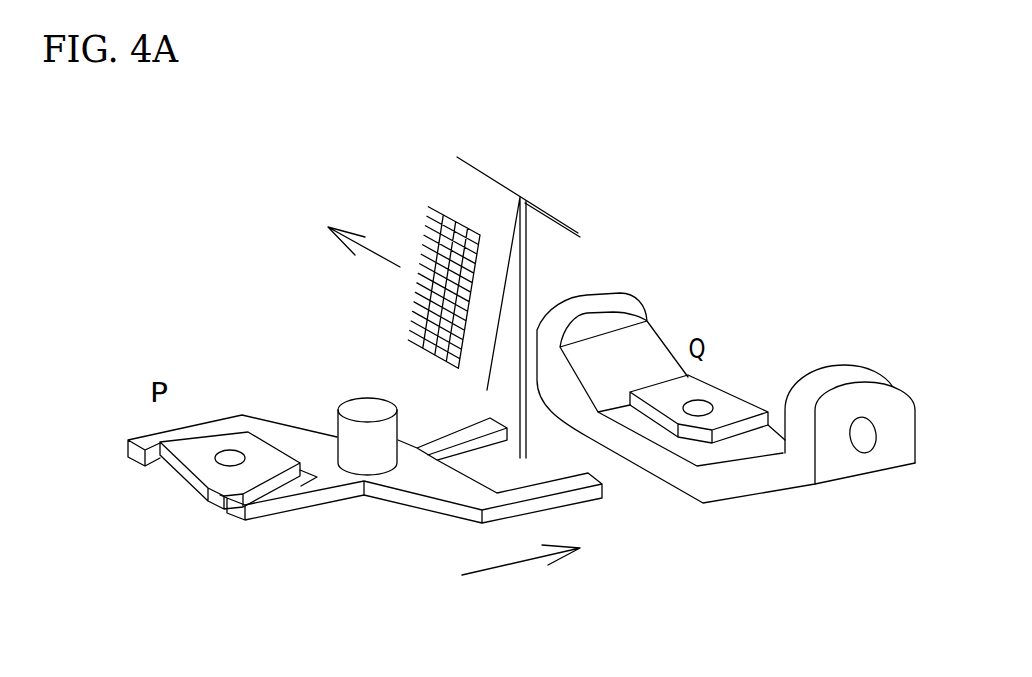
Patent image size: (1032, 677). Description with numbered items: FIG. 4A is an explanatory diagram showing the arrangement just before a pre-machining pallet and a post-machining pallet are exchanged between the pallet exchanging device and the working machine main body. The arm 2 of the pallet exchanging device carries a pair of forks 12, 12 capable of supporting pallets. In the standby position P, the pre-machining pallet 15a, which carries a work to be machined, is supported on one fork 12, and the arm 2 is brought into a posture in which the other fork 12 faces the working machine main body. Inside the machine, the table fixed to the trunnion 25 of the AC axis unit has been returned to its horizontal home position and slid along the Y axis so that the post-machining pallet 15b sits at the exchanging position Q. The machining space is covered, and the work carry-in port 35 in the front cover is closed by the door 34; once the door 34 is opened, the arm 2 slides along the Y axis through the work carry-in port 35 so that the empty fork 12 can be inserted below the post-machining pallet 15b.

The arm 2 is at (325, 368).
The fork 12 is at (283, 505).
The pre-machining pallet 15a is at (190, 462).
The post-machining pallet 15b is at (725, 392).
The trunnion 25 is at (892, 405).
The door 34 is at (477, 178).
The work carry-in port 35 is at (548, 237).